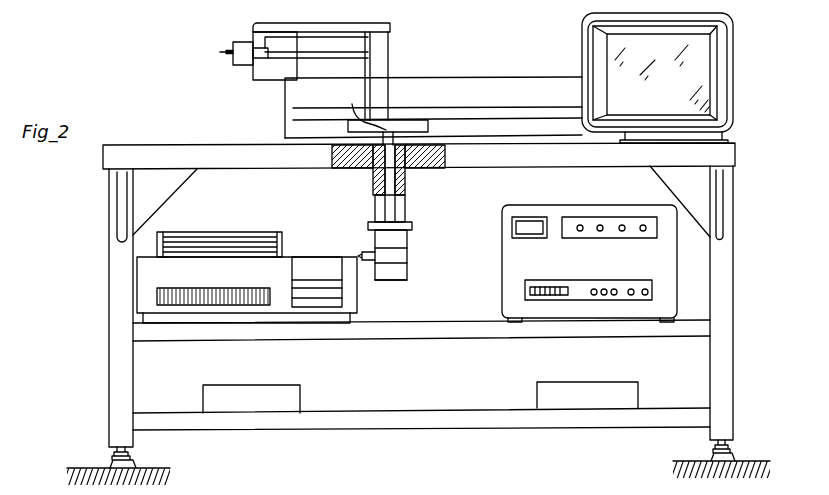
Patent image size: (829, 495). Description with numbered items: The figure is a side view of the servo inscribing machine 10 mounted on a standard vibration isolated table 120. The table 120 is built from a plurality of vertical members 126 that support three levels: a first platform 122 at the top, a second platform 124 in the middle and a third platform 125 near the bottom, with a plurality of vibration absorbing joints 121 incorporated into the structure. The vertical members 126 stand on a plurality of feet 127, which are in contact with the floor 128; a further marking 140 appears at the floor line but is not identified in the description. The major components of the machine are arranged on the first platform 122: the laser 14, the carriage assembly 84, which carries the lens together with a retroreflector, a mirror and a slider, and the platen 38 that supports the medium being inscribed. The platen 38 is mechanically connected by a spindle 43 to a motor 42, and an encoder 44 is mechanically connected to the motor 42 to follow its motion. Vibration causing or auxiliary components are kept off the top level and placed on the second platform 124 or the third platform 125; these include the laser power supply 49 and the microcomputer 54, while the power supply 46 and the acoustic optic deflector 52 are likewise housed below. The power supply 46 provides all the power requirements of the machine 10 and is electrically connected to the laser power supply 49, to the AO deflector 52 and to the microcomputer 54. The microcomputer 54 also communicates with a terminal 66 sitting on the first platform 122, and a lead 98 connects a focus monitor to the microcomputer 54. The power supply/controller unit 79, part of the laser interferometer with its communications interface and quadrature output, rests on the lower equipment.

The servo inscribing machine 10 is at (458, 0).
The laser 14 is at (484, 78).
The platen 38 is at (415, 120).
The motor 42 is at (405, 245).
The spindle 43 is at (356, 108).
The encoder 44 is at (375, 280).
The power supply 46 is at (223, 385).
The laser power supply 49 is at (592, 271).
The acoustic optic deflector 52 is at (573, 382).
The microcomputer 54 is at (290, 257).
The terminal 66 is at (733, 76).
The power supply/controller unit 79 is at (239, 232).
The carriage assembly 84 is at (283, 23).
The lead 98 is at (226, 32).
The vibration isolated table 120 is at (751, 365).
The vibration absorbing joints 121 is at (118, 212).
The first platform 122 is at (193, 145).
The second platform 124 is at (340, 342).
The third platform 125 is at (383, 428).
The vertical members 126 is at (109, 292).
The feet 127 is at (112, 466).
The floor 128 is at (170, 474).
The floor line 140 is at (806, 491).